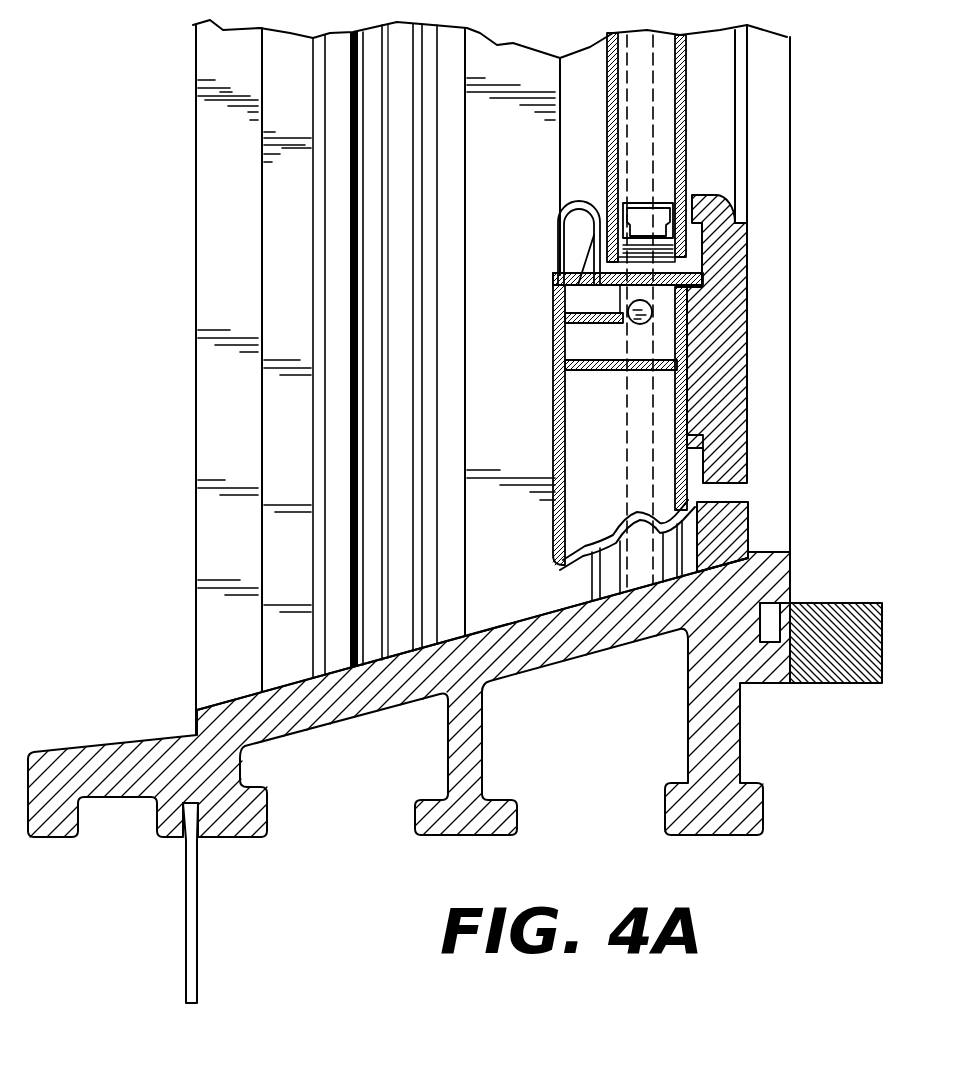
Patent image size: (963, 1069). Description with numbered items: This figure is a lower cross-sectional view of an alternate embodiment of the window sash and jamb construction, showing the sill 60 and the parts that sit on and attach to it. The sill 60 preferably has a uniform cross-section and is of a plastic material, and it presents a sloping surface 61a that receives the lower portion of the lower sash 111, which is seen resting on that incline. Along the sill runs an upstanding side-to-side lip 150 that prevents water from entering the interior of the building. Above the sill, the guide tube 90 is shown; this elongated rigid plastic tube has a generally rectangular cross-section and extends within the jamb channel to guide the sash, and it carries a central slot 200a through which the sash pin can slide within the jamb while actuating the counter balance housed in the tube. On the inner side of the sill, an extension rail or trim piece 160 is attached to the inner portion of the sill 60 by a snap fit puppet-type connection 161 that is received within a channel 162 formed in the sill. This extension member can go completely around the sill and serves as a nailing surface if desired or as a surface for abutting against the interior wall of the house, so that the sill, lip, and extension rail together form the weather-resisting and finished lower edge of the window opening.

The sill 60 is at (409, 777).
The sloping surface 61a is at (530, 615).
The guide tube 90 is at (342, 399).
The central slot 200a is at (372, 423).
The lower sash 111 is at (553, 437).
The lip 150 is at (735, 528).
The extension rail 160 is at (840, 600).
The snap fit connection 161 is at (770, 610).
The channel 162 is at (767, 622).